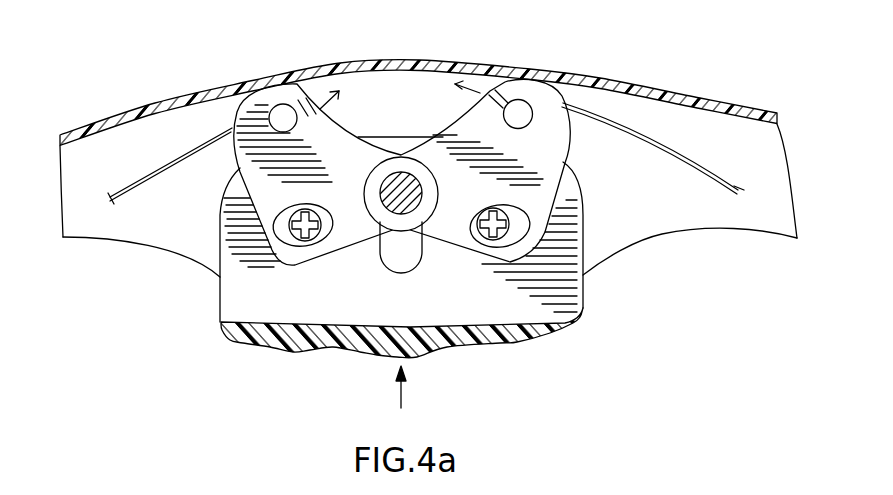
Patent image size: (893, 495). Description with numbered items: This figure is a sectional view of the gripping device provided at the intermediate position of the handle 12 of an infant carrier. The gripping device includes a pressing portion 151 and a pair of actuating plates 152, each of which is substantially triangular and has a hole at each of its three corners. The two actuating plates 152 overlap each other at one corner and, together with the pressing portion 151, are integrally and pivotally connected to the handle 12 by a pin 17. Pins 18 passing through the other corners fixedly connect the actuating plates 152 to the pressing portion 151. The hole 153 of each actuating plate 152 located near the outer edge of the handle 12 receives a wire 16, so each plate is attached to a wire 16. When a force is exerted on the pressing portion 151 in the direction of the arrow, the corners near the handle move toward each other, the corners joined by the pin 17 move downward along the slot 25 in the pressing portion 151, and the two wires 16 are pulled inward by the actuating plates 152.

The handle 12 is at (604, 74).
The wire 16 is at (183, 150).
The pin 17 is at (421, 183).
The pin 18 is at (296, 239).
The slot 25 is at (393, 257).
The pressing portion 151 is at (273, 312).
The actuating plate 152 is at (322, 108).
The hole 153 is at (283, 116).